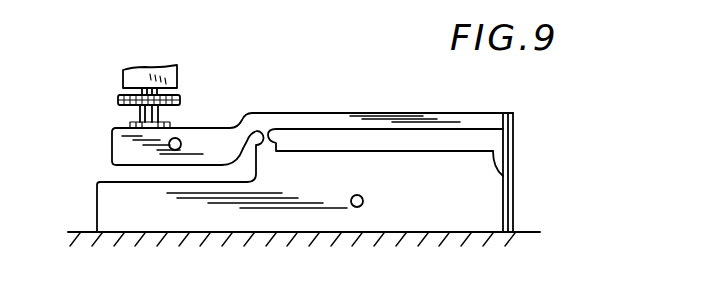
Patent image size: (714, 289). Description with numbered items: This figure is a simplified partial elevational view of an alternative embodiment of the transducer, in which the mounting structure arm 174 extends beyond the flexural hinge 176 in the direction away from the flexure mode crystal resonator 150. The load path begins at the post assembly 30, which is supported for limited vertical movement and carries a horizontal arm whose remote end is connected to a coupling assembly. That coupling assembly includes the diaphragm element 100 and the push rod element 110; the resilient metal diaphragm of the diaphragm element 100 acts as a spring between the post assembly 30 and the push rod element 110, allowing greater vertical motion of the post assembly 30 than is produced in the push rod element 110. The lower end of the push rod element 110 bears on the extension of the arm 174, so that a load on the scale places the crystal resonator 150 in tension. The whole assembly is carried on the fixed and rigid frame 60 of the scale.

The post assembly 30 is at (179, 73).
The diaphragm element 100 is at (180, 99).
The push rod element 110 is at (137, 122).
The mounting structure arm 174 is at (433, 118).
The flexural hinge 176 is at (285, 139).
The flexure mode crystal resonator 150 is at (516, 165).
The frame 60 is at (537, 238).